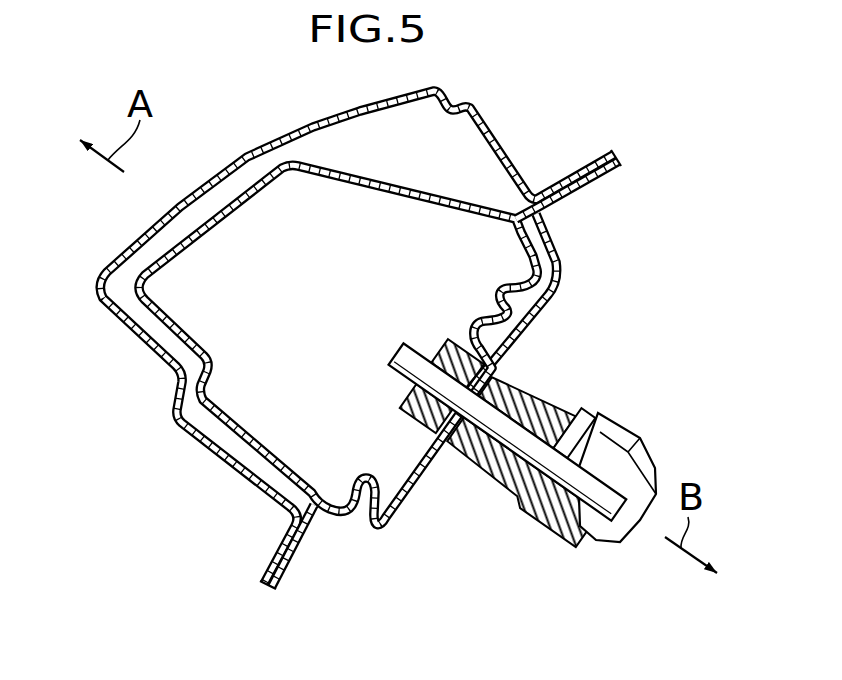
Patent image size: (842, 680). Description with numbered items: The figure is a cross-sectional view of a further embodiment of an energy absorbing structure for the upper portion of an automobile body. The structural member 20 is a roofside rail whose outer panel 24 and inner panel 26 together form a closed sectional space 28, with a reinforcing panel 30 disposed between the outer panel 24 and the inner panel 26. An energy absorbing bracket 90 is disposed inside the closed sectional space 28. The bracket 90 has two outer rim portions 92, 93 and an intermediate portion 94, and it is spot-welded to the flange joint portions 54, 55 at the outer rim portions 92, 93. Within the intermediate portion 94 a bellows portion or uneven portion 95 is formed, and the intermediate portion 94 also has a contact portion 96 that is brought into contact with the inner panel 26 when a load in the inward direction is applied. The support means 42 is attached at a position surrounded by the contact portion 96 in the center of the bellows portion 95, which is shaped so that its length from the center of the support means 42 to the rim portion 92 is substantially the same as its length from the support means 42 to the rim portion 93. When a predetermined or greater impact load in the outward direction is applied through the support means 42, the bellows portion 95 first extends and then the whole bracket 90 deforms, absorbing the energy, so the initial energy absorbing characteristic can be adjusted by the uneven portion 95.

The structural member 20 is at (232, 147).
The outer panel 24 is at (150, 212).
The inner panel 26 is at (390, 535).
The closed sectional space 28 is at (377, 214).
The reinforcing panel 30 is at (337, 178).
The support means 42 is at (521, 502).
The flange joint portion 54 is at (275, 540).
The flange joint portion 55 is at (570, 178).
The energy absorbing bracket 90 is at (350, 530).
The outer rim portion 92 is at (302, 548).
The outer rim portion 93 is at (606, 178).
The intermediate portion 94 is at (508, 371).
The bellows portion or uneven portion 95 is at (540, 317).
The contact portion 96 is at (437, 440).